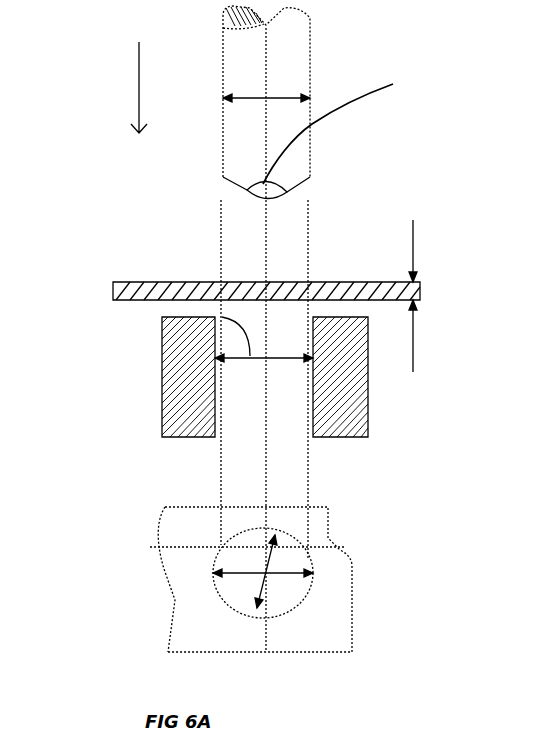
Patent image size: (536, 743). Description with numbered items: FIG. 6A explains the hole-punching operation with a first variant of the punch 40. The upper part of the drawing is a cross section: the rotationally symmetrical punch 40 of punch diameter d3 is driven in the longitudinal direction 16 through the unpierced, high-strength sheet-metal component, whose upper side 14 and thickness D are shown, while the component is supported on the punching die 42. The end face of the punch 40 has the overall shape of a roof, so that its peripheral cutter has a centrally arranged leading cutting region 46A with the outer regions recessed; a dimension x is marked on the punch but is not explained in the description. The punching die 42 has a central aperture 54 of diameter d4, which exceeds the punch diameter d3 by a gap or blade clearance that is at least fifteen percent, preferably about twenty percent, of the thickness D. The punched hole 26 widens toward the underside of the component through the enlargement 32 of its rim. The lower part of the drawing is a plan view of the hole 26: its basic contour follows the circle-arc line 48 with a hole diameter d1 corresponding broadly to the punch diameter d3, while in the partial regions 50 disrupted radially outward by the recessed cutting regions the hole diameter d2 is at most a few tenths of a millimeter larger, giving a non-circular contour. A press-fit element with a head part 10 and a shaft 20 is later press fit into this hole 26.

The head part 10 is at (112, 308).
The upper side 14 is at (190, 283).
The longitudinal direction 16 is at (139, 86).
The shaft 20 is at (112, 306).
The hole 26 is at (300, 301).
The enlargement 32 is at (284, 281).
The punch 40 is at (298, 68).
The punching die 42 is at (358, 404).
The leading cutting region 46A is at (254, 200).
The circle-arc line 48 is at (280, 610).
The partial regions 50 is at (316, 568).
The central aperture 54 is at (288, 194).
The hole diameter d1 is at (275, 538).
The hole diameter d2 is at (289, 578).
The punch diameter d3 is at (252, 96).
The diameter of the central aperture d4 is at (165, 338).
The distance x is at (333, 128).
The thickness D is at (415, 240).